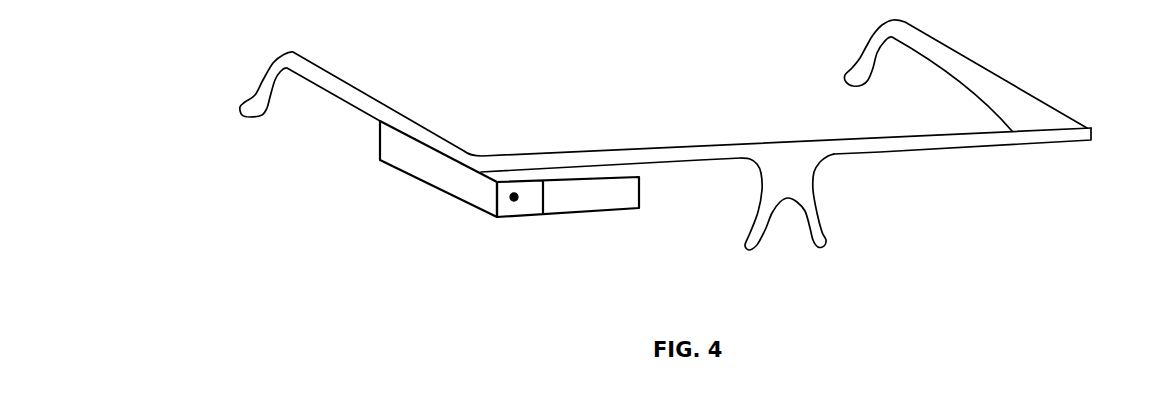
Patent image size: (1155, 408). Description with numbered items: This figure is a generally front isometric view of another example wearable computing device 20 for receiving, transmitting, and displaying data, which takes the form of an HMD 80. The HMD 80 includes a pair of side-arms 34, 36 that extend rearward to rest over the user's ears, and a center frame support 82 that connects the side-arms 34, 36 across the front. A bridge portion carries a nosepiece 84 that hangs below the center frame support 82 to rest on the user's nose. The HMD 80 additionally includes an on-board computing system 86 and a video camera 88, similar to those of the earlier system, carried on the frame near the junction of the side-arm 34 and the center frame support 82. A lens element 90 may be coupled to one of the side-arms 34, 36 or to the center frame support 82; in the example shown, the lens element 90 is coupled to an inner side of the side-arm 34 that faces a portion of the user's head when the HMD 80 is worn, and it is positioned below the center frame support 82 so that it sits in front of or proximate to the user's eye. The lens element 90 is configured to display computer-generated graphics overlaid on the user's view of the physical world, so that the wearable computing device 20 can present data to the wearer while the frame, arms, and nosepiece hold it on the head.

The wearable computing device 20 is at (697, 136).
The side-arm 34 is at (345, 92).
The side-arm 36 is at (933, 47).
The HMD 80 is at (697, 134).
The center frame support 82 is at (683, 152).
The nosepiece 84 is at (810, 192).
The on-board computing system 86 is at (417, 178).
The video camera 88 is at (512, 200).
The lens element 90 is at (595, 212).